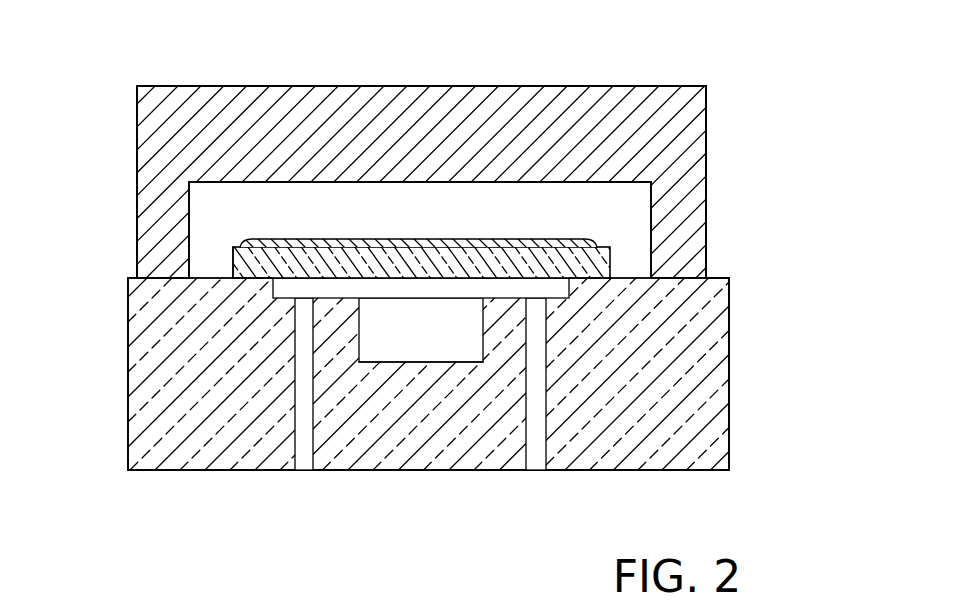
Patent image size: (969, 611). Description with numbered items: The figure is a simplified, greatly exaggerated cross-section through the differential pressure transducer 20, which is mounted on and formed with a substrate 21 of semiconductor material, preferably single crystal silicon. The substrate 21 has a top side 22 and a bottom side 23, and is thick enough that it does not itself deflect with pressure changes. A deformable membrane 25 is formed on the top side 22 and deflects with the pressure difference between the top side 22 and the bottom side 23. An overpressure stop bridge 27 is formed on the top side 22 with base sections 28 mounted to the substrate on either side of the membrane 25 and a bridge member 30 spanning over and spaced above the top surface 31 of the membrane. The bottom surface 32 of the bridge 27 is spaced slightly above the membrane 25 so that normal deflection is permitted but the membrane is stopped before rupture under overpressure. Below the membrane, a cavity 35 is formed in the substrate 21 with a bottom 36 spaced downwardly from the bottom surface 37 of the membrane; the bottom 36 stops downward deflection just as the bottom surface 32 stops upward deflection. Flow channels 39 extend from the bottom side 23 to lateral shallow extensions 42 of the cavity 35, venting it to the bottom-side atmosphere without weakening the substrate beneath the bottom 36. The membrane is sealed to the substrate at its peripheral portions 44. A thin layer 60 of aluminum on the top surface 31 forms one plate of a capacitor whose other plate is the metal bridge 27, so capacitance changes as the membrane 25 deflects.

The differential pressure transducer 20 is at (121, 269).
The substrate 21 is at (128, 432).
The top side of the substrate 22 is at (718, 276).
The bottom side of the substrate 23 is at (233, 470).
The deformable membrane 25 is at (232, 262).
The overpressure stop bridge 27 is at (706, 157).
The base sections 28 is at (137, 198).
The bridge member 30 is at (558, 86).
The top surface of the membrane 31 is at (603, 245).
The bottom surface of the bridge 32 is at (232, 183).
The cavity 35 is at (370, 347).
The bottom of the cavity 36 is at (447, 372).
The bottom surface of the membrane 37 is at (442, 281).
The flow channels 39 is at (306, 471).
The lateral shallow extensions of the cavity 42 is at (306, 290).
The peripheral portions of the membrane 44 is at (240, 283).
The layer of aluminum 60 is at (455, 240).